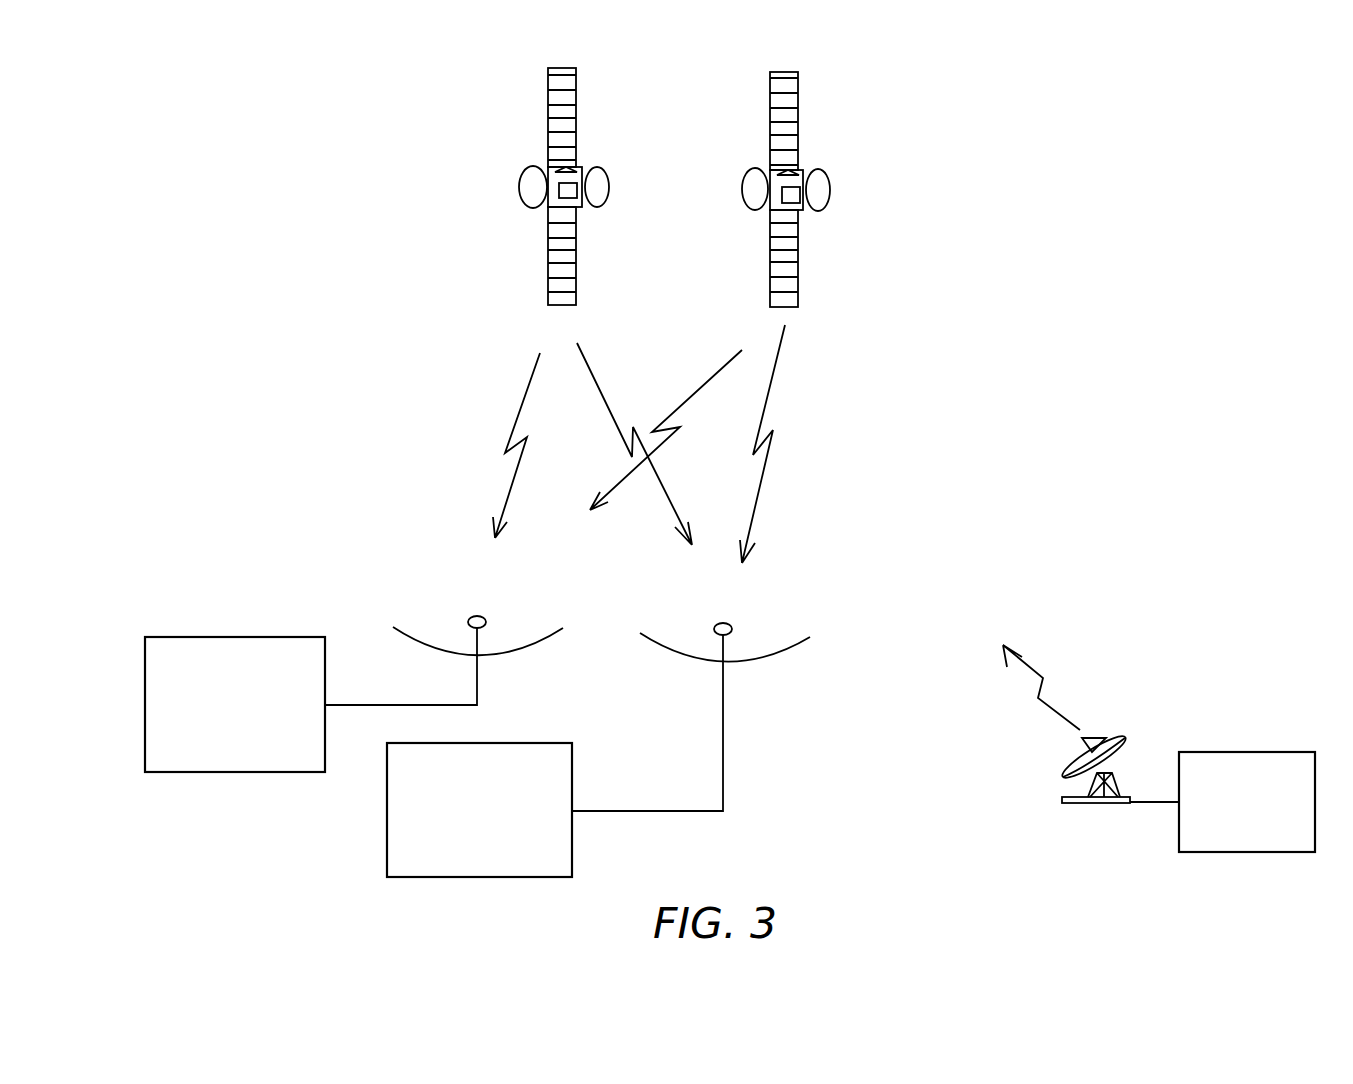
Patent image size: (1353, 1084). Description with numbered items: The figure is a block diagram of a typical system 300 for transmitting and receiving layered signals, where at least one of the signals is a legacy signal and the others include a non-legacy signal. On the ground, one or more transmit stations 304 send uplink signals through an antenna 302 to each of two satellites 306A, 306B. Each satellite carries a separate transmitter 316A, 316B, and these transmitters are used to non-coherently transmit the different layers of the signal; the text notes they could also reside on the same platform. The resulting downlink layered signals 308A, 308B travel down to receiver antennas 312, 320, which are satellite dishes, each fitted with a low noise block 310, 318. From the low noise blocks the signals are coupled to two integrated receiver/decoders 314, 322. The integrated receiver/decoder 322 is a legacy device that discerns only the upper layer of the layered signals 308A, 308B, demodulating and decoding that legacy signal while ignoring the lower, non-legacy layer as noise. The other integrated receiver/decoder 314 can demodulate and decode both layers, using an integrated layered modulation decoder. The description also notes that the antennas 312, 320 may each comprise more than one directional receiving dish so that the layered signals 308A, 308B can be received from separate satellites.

The system 300 is at (1031, 105).
The antenna 302 is at (1102, 738).
The transmit station 304 is at (1247, 752).
The satellite 306A is at (528, 165).
The satellite 306B is at (830, 183).
The layered signal 308A is at (577, 350).
The layered signal 308B is at (785, 333).
The low noise block 310 is at (478, 616).
The receiver antenna 312 is at (407, 633).
The integrated receiver/decoder 314 is at (237, 772).
The transmitter 316A is at (572, 184).
The transmitter 316B is at (797, 187).
The low noise block 318 is at (727, 623).
The receiver antenna 320 is at (740, 660).
The integrated receiver/decoder 322 is at (386, 834).